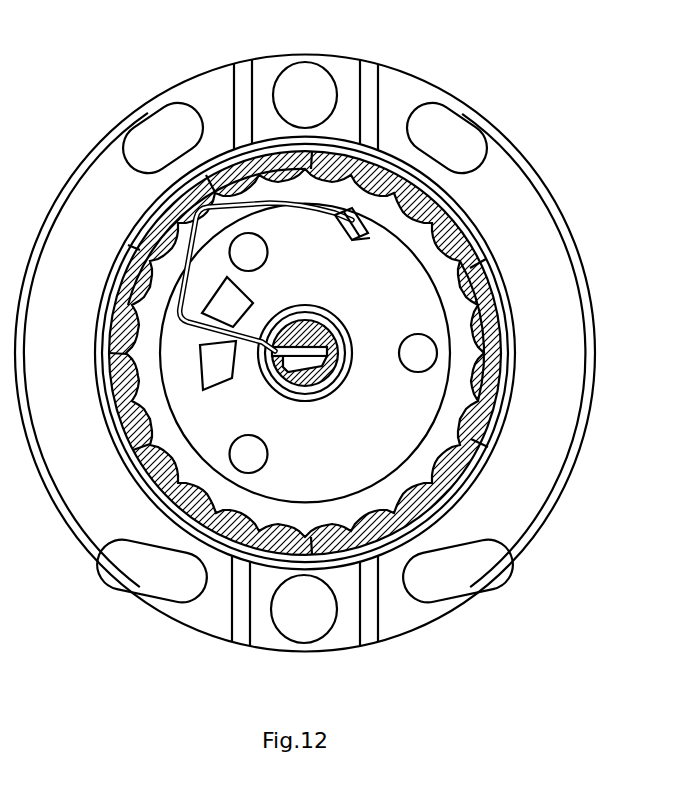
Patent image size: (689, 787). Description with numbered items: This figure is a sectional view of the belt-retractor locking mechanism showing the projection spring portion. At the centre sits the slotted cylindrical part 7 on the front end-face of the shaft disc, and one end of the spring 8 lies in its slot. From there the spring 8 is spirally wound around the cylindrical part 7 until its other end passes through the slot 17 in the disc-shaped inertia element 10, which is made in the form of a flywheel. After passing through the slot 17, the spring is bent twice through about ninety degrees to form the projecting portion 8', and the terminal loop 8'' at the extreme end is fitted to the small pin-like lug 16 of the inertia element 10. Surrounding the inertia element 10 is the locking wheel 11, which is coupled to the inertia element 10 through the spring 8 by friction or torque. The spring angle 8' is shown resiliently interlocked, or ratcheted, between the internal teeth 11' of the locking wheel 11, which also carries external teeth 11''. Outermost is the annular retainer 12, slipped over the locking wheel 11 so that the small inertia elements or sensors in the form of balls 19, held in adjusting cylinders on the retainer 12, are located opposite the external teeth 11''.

The annular retainer 12 is at (412, 97).
The balls 19 is at (325, 80).
The locking wheel 11 is at (290, 353).
The internal teeth 11' is at (170, 248).
The teeth 11'' is at (518, 326).
The inertia element 10 is at (391, 410).
The slot 17 is at (200, 362).
The spring 8 is at (317, 351).
The slotted cylindrical part 7 is at (313, 370).
The projecting portion 8' is at (228, 273).
The terminal loop 8'' is at (470, 196).
The lug 16 is at (367, 213).